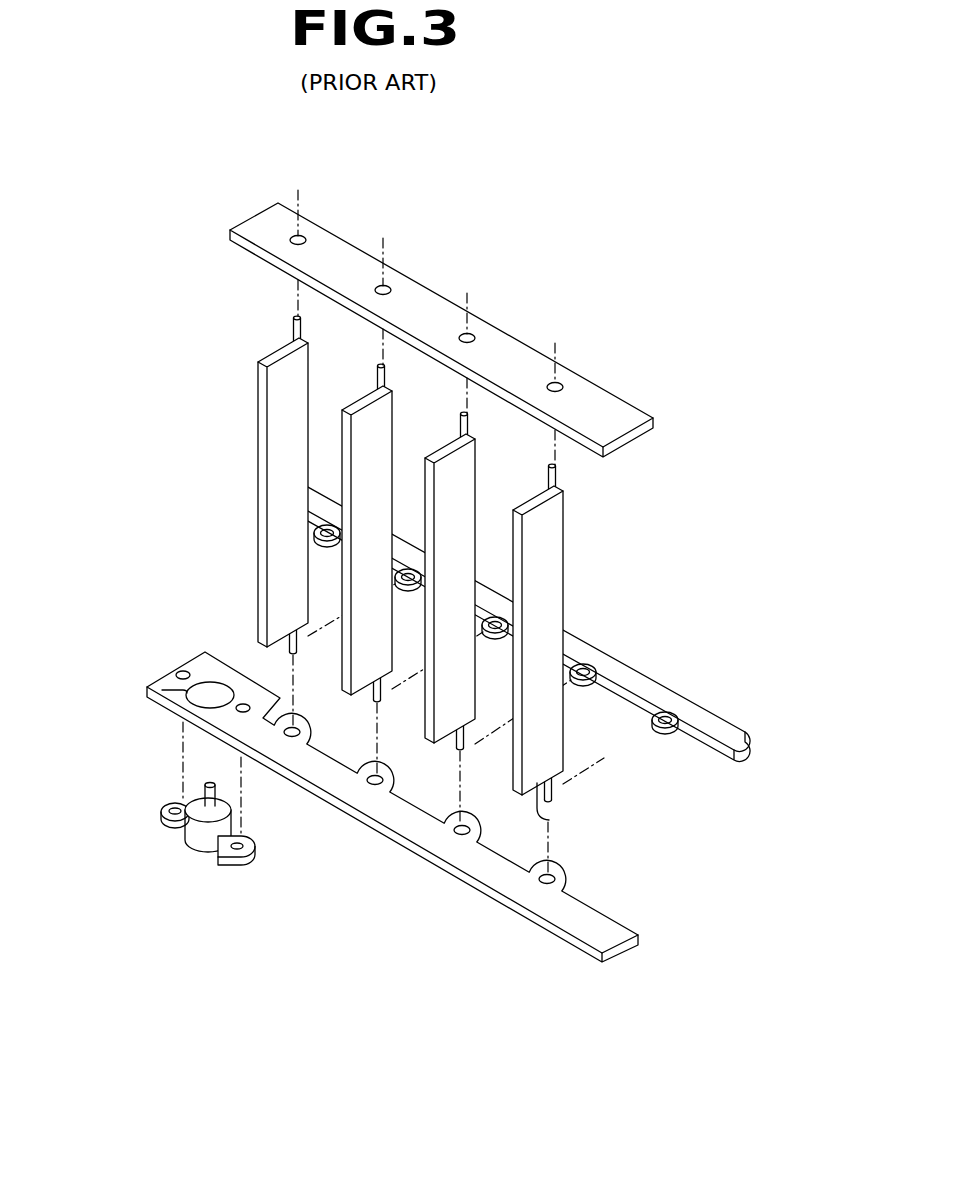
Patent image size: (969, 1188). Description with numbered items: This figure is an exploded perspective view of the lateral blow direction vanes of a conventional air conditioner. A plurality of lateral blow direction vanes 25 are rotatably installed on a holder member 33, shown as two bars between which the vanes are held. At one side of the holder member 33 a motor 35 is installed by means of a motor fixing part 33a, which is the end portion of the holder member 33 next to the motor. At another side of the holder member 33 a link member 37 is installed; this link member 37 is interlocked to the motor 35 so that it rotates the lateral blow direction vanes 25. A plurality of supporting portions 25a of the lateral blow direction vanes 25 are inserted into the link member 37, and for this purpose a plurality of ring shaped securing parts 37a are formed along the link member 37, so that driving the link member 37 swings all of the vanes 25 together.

The lateral blow direction vane 25 is at (557, 567).
The supporting portion 25a is at (550, 820).
The holder member 33 is at (610, 402).
The motor fixing part 33a is at (147, 694).
The lateral blow direction motor 35 is at (193, 847).
The link member 37 is at (715, 713).
The ring shaped securing part 37a is at (661, 716).